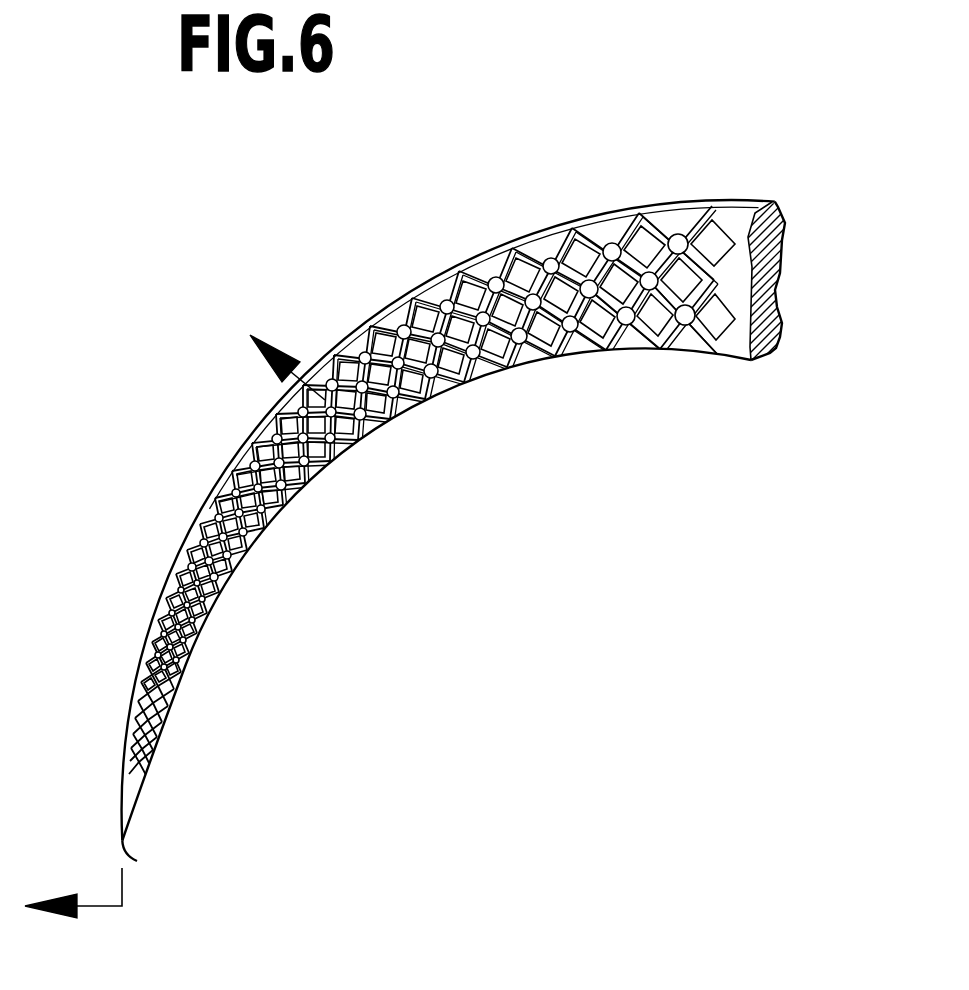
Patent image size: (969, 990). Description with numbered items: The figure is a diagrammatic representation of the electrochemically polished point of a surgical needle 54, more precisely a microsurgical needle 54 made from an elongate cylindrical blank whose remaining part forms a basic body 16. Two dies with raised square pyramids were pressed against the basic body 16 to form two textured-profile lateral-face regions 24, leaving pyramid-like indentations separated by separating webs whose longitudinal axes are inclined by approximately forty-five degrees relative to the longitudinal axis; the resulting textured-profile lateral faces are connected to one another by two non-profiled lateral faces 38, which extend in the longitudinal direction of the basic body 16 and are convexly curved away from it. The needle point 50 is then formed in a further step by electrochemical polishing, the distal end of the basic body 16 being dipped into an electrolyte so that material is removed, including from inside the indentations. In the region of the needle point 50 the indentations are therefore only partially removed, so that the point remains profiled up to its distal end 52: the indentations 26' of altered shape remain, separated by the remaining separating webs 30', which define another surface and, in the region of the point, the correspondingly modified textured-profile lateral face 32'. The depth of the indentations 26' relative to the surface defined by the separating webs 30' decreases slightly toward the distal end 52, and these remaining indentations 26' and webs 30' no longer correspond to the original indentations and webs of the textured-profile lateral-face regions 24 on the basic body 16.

The basic body 16 is at (787, 243).
The textured-profile lateral-face regions 24 is at (598, 232).
The indentations of altered shape 26' is at (400, 467).
The separating webs 30' is at (425, 423).
The lattice struts 32' is at (425, 490).
The non-profiled lateral faces 38 is at (773, 202).
The needle point 50 is at (285, 507).
The distal end 52 is at (137, 861).
The surgical needle 54 is at (328, 322).